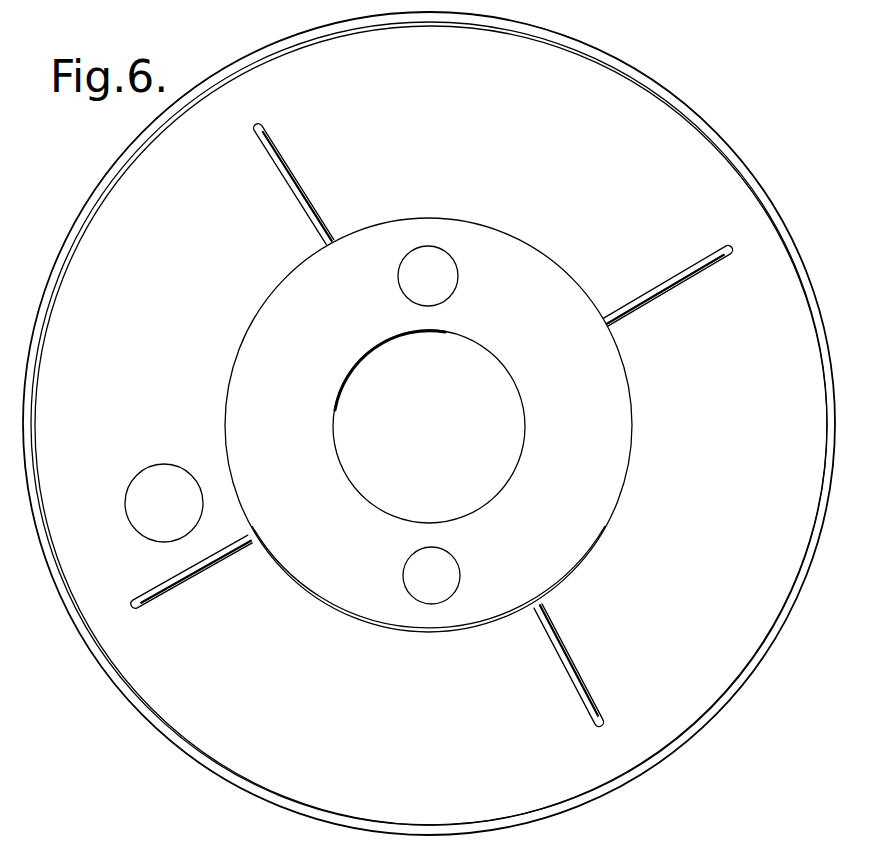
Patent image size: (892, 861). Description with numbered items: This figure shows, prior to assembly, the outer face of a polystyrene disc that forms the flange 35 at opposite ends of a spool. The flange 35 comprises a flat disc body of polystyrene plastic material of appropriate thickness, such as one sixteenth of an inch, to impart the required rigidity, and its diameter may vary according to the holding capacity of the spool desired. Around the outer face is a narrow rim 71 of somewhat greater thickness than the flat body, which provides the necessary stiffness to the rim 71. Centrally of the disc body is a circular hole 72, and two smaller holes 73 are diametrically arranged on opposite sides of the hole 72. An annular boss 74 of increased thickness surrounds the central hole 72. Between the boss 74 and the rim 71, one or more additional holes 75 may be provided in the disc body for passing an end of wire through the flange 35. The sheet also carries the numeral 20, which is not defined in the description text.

The disc rim 71 is at (80, 213).
The plate edge 35 is at (665, 769).
The hub 74 is at (573, 459).
The central hole 72 is at (503, 370).
The mounting holes 73 is at (442, 262).
The hole 75 is at (140, 538).
The plate 20 is at (803, 842).